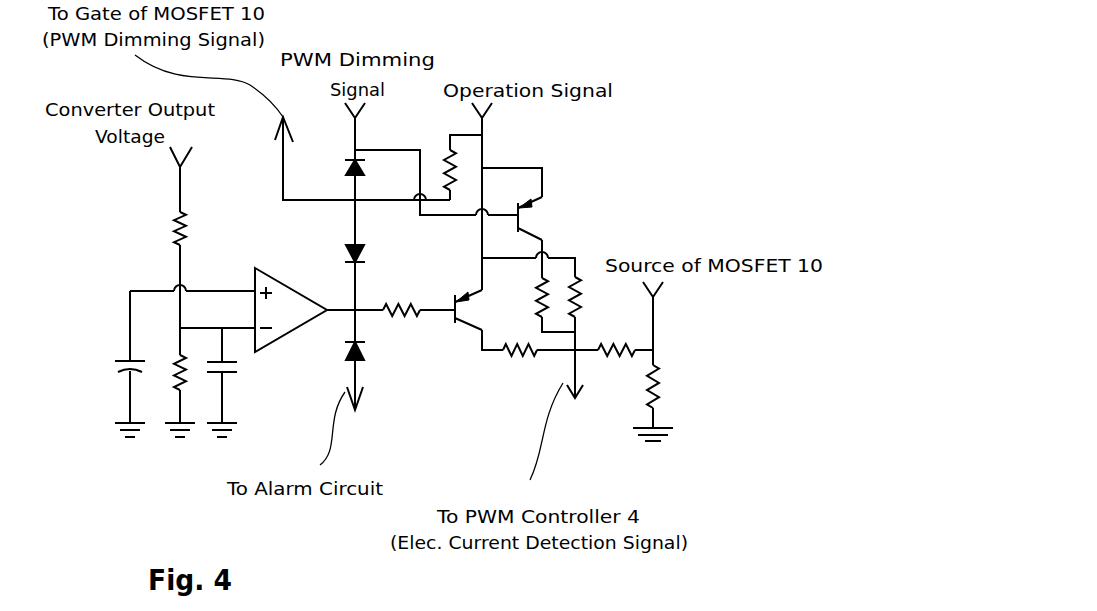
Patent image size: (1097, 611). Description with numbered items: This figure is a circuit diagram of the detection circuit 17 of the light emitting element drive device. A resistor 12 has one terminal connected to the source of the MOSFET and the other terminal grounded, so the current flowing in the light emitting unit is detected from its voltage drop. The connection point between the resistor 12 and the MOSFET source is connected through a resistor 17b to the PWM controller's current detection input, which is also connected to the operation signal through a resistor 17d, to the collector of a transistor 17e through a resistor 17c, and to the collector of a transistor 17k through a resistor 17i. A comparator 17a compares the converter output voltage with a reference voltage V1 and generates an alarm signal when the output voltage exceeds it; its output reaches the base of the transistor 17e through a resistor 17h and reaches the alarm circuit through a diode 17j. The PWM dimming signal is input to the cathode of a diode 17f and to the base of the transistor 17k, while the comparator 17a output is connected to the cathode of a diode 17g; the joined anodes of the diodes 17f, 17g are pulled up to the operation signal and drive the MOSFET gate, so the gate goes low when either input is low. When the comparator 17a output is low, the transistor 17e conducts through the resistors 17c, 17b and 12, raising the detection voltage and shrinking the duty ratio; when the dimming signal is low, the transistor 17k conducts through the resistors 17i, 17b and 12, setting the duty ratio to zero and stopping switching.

The detection circuit 17 is at (650, 155).
The comparator 17a is at (307, 327).
The resistor 17b is at (613, 338).
The resistor 17c is at (533, 340).
The resistor 17d is at (580, 268).
The transistor 17e is at (467, 327).
The diode 17f is at (355, 172).
The diode 17g is at (353, 245).
The resistor 17h is at (425, 274).
The resistor 17i is at (533, 285).
The diode 17j is at (360, 352).
The transistor 17k is at (535, 222).
The resistor 12 is at (660, 383).
The reference voltage V1 is at (128, 372).